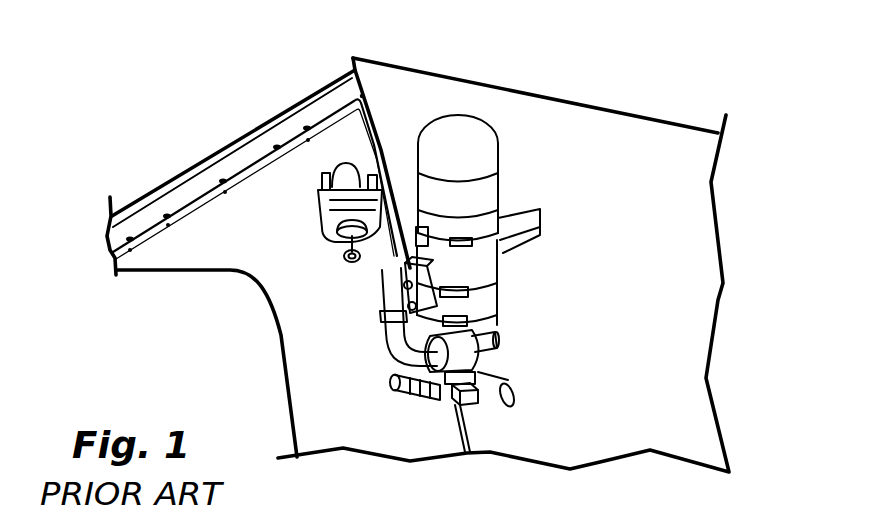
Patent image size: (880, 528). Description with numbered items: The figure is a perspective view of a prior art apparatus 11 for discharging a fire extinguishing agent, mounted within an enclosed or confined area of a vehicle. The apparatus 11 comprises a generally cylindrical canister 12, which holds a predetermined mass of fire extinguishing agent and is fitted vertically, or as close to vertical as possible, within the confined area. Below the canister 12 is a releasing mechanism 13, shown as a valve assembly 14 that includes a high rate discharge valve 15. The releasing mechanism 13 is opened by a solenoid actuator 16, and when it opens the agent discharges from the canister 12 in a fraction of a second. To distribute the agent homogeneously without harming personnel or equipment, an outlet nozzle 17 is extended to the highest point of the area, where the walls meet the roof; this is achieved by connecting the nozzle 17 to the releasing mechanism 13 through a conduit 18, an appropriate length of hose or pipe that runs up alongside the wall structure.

The apparatus 11 is at (572, 133).
The canister 12 is at (472, 133).
The releasing mechanism 13 is at (515, 356).
The valve assembly 14 is at (486, 413).
The high rate discharge (HRD) valve 15 is at (404, 368).
The solenoid actuator 16 is at (437, 404).
The outlet nozzle 17 is at (346, 263).
The conduit 18 is at (372, 284).